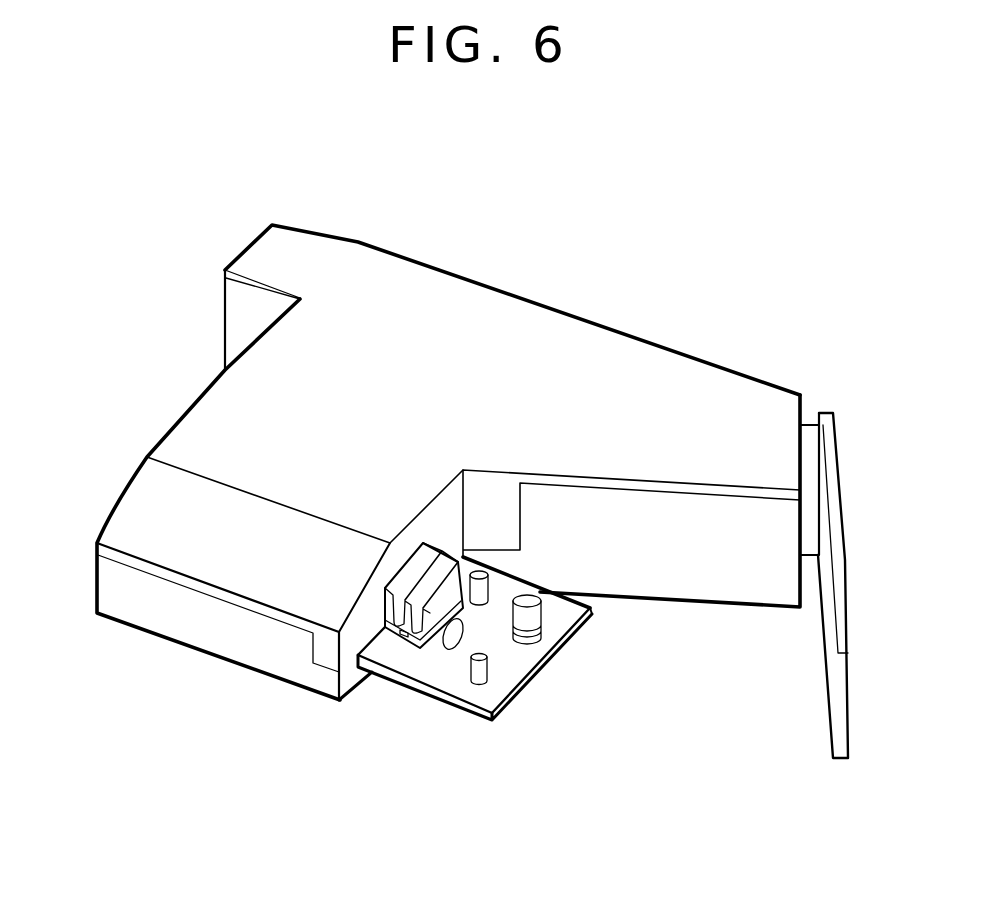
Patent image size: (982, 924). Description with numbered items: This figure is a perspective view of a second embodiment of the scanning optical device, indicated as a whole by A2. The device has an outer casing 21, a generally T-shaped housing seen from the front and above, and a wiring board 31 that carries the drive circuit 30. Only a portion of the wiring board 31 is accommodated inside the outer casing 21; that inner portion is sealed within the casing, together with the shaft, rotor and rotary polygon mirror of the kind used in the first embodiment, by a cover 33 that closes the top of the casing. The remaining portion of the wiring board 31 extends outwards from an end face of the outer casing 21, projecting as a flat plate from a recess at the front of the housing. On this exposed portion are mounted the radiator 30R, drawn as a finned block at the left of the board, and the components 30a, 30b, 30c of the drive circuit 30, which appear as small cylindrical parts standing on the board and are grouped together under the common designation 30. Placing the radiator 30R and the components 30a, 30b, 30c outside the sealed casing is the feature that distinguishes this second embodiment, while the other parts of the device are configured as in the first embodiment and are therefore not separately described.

The tail lamp assembly A2 is at (218, 267).
The outer casing 21 is at (198, 637).
The cover 33 is at (698, 357).
The wiring board 31 is at (400, 666).
The radiator 30R is at (431, 632).
The drive circuit 30 is at (684, 624).
The component of the drive circuit 30a is at (488, 669).
The component of the drive circuit 30b is at (547, 627).
The component of the drive circuit 30c is at (472, 572).